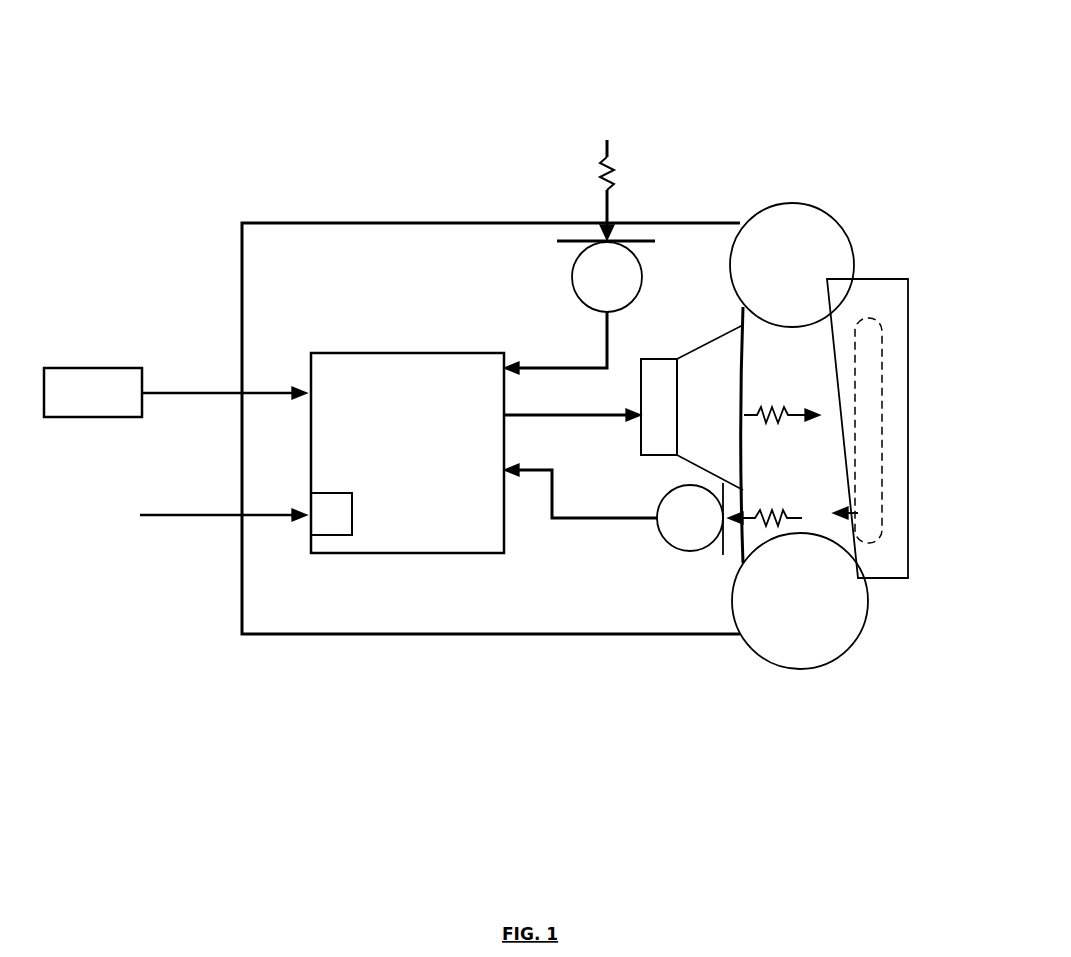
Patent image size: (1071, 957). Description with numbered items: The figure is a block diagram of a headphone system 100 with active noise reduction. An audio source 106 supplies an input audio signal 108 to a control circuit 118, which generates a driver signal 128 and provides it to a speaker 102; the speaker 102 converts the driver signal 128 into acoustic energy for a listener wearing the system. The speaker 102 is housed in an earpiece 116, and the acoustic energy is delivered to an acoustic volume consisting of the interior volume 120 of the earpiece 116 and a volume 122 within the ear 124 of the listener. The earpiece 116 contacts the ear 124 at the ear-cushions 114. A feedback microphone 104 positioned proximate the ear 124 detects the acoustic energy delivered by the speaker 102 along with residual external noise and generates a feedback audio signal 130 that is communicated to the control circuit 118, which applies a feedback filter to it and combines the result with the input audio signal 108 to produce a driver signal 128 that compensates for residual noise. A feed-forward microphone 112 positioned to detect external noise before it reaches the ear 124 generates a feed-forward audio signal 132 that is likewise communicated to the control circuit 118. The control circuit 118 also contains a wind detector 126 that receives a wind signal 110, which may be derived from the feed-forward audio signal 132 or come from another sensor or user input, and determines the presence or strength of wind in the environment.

The headphone system 100 is at (886, 86).
The speaker 102 is at (677, 358).
The feedback microphone 104 is at (655, 507).
The audio source 106 is at (62, 367).
The input audio signal 108 is at (170, 390).
The wind signal 110 is at (158, 513).
The feed-forward microphone 112 is at (572, 265).
The ear-cushions 114 is at (795, 222).
The earpiece 116 is at (665, 220).
The control circuit 118 is at (363, 352).
The interior volume 120 is at (857, 513).
The volume within the ear 122 is at (878, 375).
The ear 124 is at (905, 278).
The wind detector 126 is at (352, 522).
The driver signal 128 is at (535, 413).
The feedback audio signal 130 is at (608, 520).
The feed-forward audio signal 132 is at (583, 362).